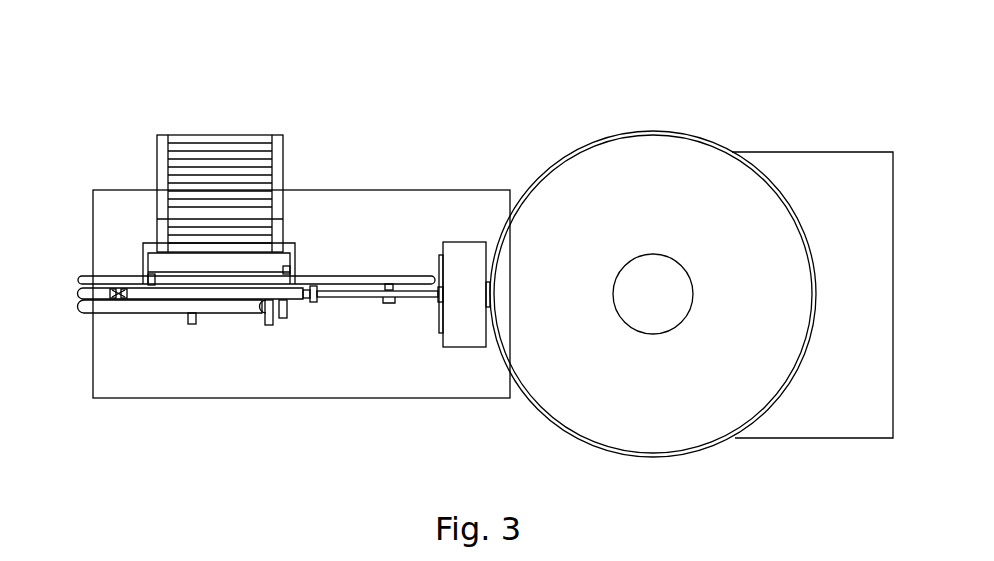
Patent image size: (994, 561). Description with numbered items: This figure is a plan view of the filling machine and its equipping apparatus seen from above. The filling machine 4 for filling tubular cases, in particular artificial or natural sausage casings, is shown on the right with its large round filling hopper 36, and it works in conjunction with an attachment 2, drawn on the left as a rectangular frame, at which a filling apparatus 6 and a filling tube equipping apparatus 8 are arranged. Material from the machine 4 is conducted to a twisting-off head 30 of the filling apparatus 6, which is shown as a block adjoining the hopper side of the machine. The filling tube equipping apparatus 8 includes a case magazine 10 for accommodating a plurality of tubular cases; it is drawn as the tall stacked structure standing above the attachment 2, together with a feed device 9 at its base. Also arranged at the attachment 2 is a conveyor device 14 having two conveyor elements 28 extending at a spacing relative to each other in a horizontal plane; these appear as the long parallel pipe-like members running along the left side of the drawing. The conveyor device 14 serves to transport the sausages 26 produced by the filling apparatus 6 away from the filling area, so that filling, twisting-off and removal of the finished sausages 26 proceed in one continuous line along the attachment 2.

The attachment 2 is at (122, 106).
The machine 4 is at (756, 112).
The filling apparatus 6 is at (377, 328).
The filling tube equipping apparatus 8 is at (285, 334).
The feed device 9 is at (232, 265).
The case magazine 10 is at (229, 168).
The conveyor device 14 is at (173, 328).
The sausage 26 is at (110, 305).
The conveyor element 28 is at (133, 305).
The twisting-off head 30 is at (462, 280).
The filling hopper 36 is at (667, 175).